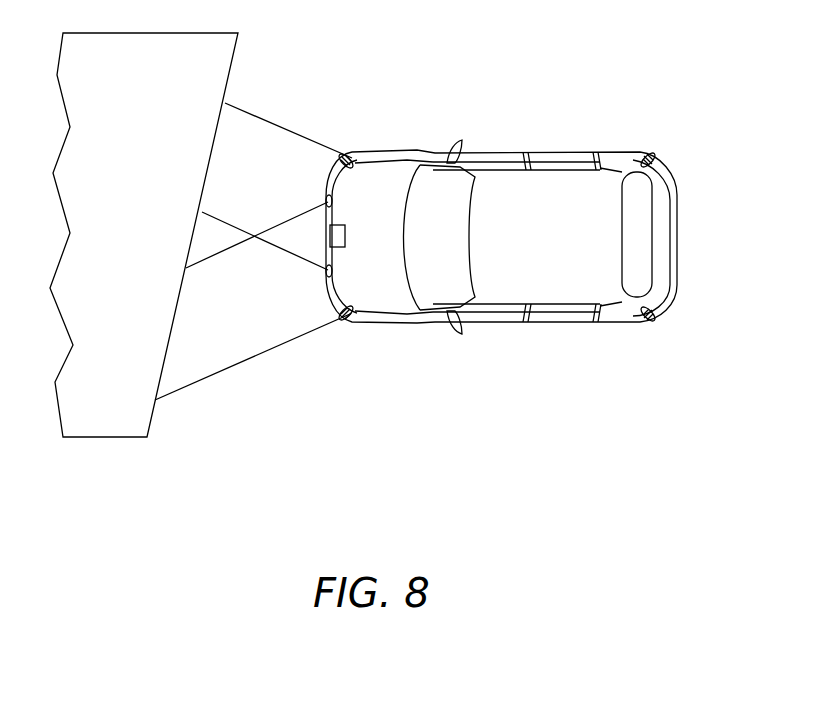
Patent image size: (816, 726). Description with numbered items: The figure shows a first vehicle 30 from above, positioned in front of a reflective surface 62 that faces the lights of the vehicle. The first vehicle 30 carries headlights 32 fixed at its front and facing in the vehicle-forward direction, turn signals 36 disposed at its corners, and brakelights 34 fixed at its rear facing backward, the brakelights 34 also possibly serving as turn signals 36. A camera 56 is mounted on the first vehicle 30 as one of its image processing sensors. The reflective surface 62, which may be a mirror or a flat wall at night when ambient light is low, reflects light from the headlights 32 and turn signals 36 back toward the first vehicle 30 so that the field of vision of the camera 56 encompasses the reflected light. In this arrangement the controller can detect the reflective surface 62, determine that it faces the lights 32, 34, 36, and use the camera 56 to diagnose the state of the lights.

The first vehicle 30 is at (552, 150).
The headlights 32 is at (332, 188).
The brakelights 34 is at (667, 170).
The turn signals 36 is at (352, 158).
The camera 56 is at (345, 240).
The reflective surface 62 is at (233, 62).